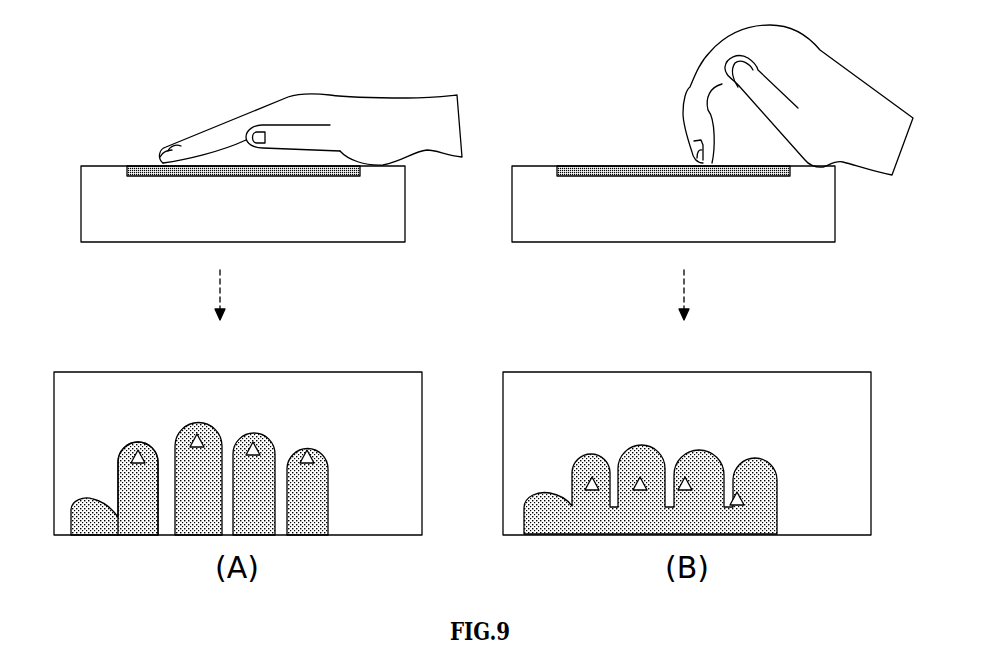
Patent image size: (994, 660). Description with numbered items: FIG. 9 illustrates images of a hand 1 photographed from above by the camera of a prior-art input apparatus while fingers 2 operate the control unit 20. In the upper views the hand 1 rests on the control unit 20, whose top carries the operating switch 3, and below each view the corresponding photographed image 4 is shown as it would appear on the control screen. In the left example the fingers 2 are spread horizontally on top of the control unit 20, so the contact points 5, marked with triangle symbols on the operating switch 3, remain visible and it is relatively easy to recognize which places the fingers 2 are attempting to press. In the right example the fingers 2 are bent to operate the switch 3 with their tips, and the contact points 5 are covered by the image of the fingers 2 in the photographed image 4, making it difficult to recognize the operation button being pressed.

The hand 1 is at (403, 98).
The fingers 2 is at (167, 148).
The operating switch 3 is at (140, 175).
The control unit 20 is at (360, 243).
The photographed image 4 is at (118, 372).
The contact points 5 is at (320, 462).